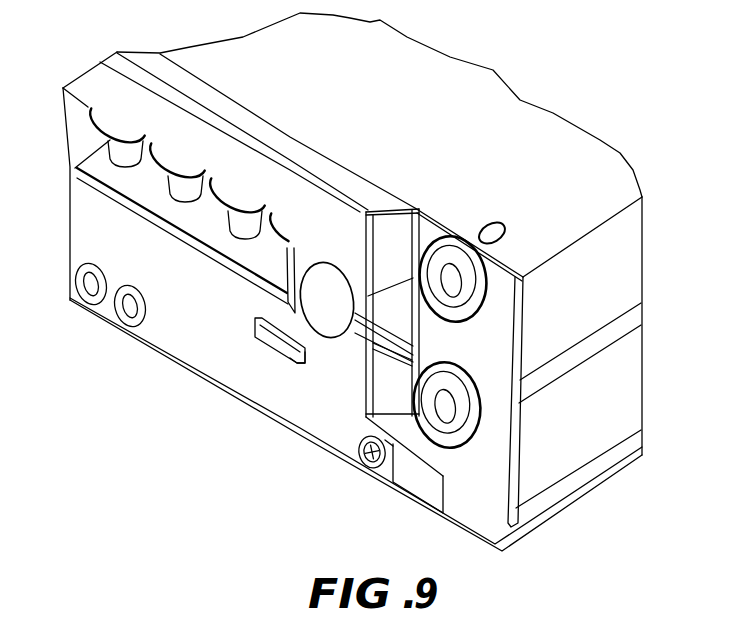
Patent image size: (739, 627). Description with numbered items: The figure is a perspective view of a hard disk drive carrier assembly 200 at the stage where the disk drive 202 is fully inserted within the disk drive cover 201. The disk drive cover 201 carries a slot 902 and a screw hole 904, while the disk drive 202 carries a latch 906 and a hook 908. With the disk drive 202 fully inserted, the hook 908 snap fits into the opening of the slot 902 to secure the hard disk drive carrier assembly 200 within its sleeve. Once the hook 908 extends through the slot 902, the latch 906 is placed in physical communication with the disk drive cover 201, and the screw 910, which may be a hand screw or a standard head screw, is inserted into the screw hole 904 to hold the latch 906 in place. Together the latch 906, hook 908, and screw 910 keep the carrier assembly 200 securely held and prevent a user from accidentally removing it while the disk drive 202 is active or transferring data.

The hard disk drive carrier assembly 200 is at (571, 86).
The disk drive cover 201 is at (80, 224).
The disk drive 202 is at (603, 170).
The slot 902 is at (260, 335).
The screw hole 904 is at (347, 434).
The latch 906 is at (417, 498).
The hook 908 is at (280, 353).
The screw 910 is at (365, 468).